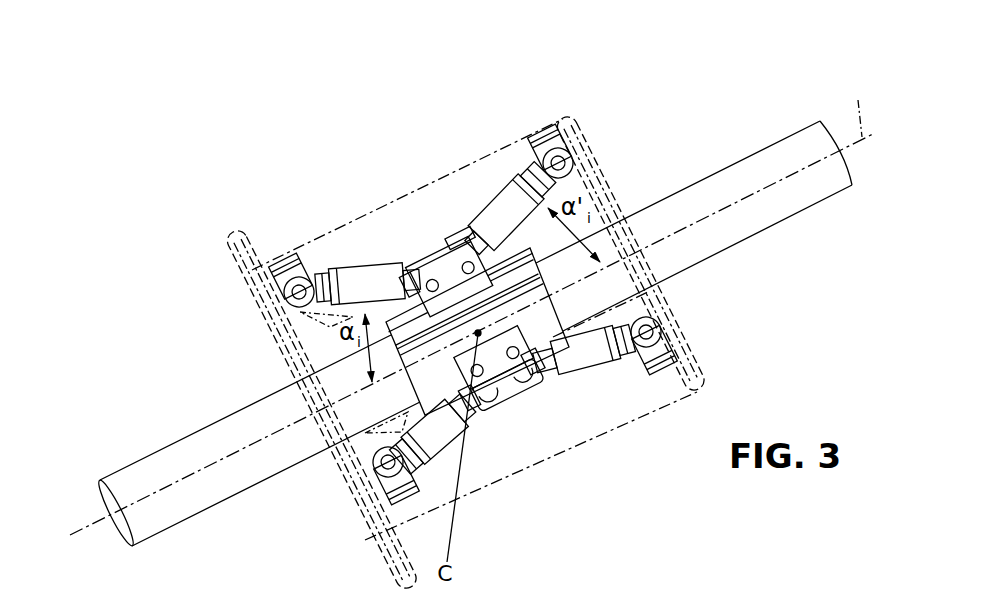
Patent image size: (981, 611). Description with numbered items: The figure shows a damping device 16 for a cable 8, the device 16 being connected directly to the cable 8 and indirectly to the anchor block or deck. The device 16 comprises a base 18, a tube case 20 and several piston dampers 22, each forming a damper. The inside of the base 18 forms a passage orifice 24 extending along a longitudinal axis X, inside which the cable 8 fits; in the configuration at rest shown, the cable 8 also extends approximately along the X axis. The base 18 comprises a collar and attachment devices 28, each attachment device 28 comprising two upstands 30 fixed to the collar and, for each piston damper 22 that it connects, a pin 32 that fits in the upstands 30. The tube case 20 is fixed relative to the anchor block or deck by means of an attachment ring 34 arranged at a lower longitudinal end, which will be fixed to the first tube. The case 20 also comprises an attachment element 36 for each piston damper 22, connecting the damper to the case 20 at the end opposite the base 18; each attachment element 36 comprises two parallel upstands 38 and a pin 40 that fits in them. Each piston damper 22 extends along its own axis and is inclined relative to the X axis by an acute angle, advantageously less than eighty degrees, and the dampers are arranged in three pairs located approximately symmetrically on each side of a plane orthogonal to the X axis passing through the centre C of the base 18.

The cable 8 is at (752, 168).
The damping device 16 is at (405, 118).
The base 18 is at (565, 323).
The tube case 20 is at (330, 233).
The piston damper 22 is at (597, 385).
The passage orifice 24 is at (535, 250).
The attachment device 28 is at (465, 222).
The upstand 30 is at (430, 278).
The pin 32 is at (467, 261).
The attachment ring 34 is at (280, 343).
The attachment element 36 is at (556, 127).
The upstand 38 is at (638, 342).
The pin 40 is at (653, 332).